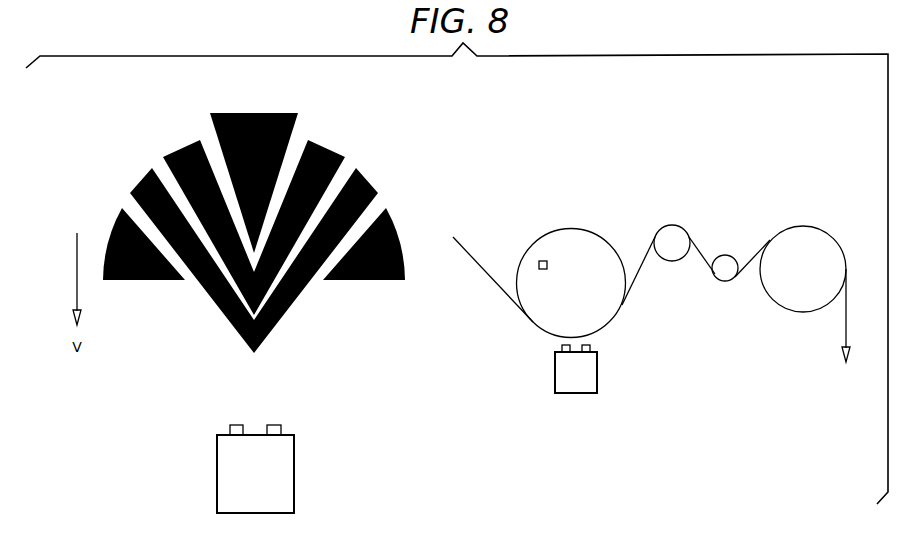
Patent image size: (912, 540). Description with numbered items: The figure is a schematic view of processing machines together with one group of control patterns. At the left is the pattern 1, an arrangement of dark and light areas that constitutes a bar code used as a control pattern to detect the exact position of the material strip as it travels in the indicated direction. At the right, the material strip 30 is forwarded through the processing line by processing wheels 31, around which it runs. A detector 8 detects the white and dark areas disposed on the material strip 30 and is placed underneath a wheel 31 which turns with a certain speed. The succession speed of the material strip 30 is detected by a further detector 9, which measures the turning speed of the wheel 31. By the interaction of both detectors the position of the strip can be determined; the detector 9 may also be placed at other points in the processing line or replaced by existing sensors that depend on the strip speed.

The pattern 1 is at (236, 113).
The detector 8 is at (278, 478).
The detector 9 is at (540, 269).
The material strip 30 is at (468, 251).
The processing wheels 31 is at (727, 258).